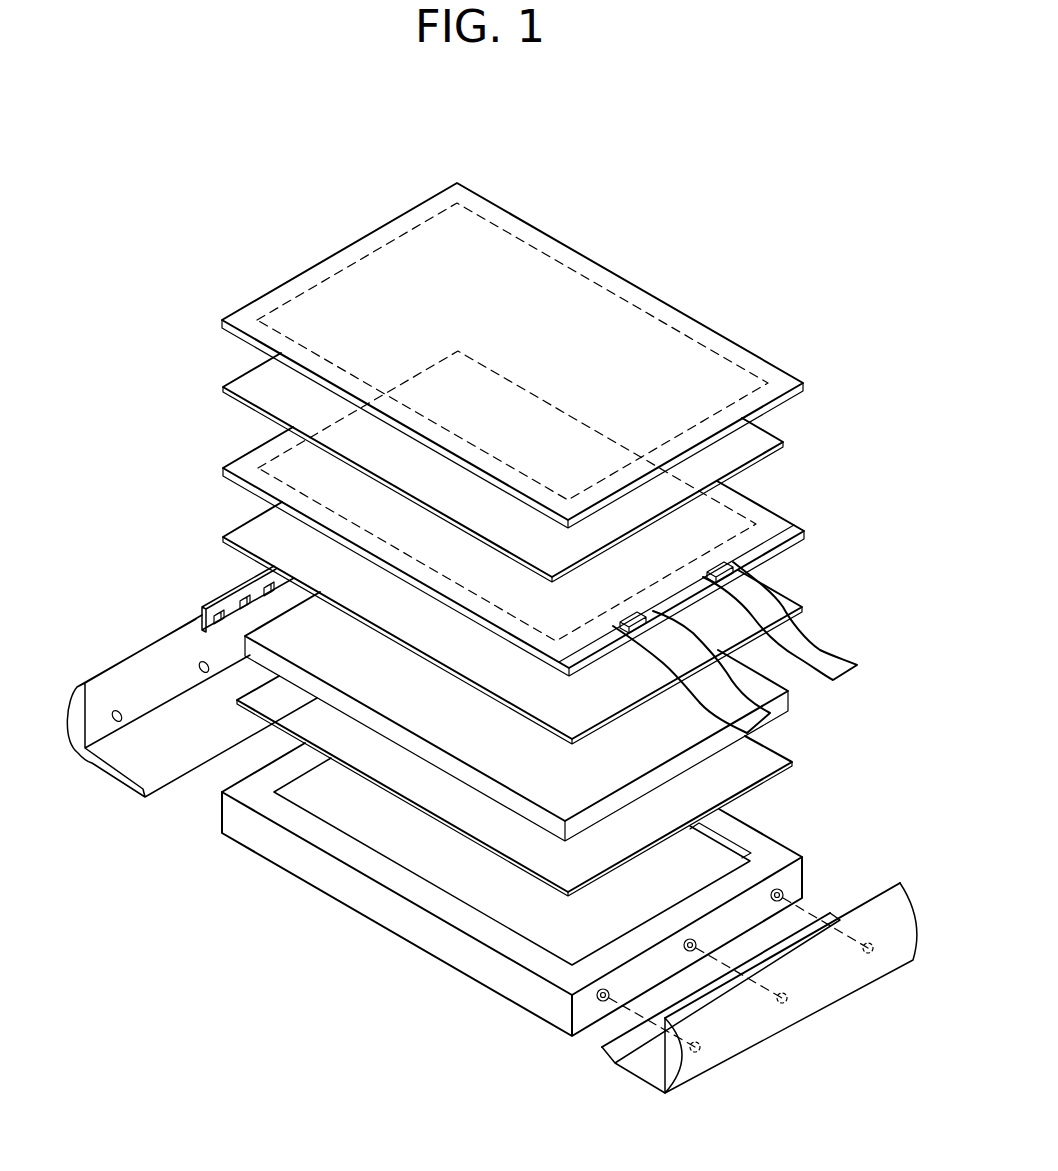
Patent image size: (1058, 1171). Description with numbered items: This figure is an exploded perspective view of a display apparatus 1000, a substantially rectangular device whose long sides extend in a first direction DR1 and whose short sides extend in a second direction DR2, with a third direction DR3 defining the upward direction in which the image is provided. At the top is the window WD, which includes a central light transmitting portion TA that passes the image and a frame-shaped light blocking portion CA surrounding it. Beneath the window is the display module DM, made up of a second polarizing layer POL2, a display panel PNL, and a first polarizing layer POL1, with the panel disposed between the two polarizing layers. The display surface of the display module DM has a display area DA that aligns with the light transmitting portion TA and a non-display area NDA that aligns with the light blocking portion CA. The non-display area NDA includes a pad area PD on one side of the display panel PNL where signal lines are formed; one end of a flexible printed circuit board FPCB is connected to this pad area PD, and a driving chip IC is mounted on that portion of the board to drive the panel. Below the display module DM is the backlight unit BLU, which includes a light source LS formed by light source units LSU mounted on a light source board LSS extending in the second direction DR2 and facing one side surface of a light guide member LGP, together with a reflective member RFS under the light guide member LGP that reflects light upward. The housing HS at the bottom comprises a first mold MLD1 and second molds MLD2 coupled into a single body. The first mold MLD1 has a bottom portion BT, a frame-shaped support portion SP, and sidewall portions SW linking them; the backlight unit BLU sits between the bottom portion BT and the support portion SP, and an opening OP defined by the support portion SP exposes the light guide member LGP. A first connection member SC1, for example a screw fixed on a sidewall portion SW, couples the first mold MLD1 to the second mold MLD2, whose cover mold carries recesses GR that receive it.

The display apparatus 1000 is at (760, 221).
The window WD is at (806, 386).
The light blocking portion CA is at (527, 226).
The light transmitting portion TA is at (569, 277).
The second polarizing layer POL2 is at (222, 388).
The display panel PNL is at (222, 466).
The first polarizing layer POL1 is at (222, 539).
The display module DM is at (120, 376).
The display area DA is at (716, 509).
The non-display area NDA is at (756, 503).
The pad area PD is at (792, 529).
The driving chip IC is at (731, 571).
The flexible printed circuit board FPCB is at (832, 656).
The light source board LSS is at (243, 595).
The light source units LSU is at (204, 608).
The light source LS is at (122, 569).
The light guide member LGP is at (786, 706).
The reflective member RFS is at (768, 767).
The backlight unit BLU is at (890, 690).
The second mold MLD2 is at (137, 787).
The groove GR is at (118, 719).
The bottom portion BT is at (384, 837).
The support portion SP is at (431, 892).
The sidewall portions SW is at (433, 933).
The first mold MLD1 is at (366, 1003).
The opening OP is at (717, 862).
The first connection member SC1 is at (600, 998).
The housing HS is at (832, 1020).
The first direction DR1 is at (90, 1085).
The second direction DR2 is at (90, 1085).
The third direction DR3 is at (90, 1085).